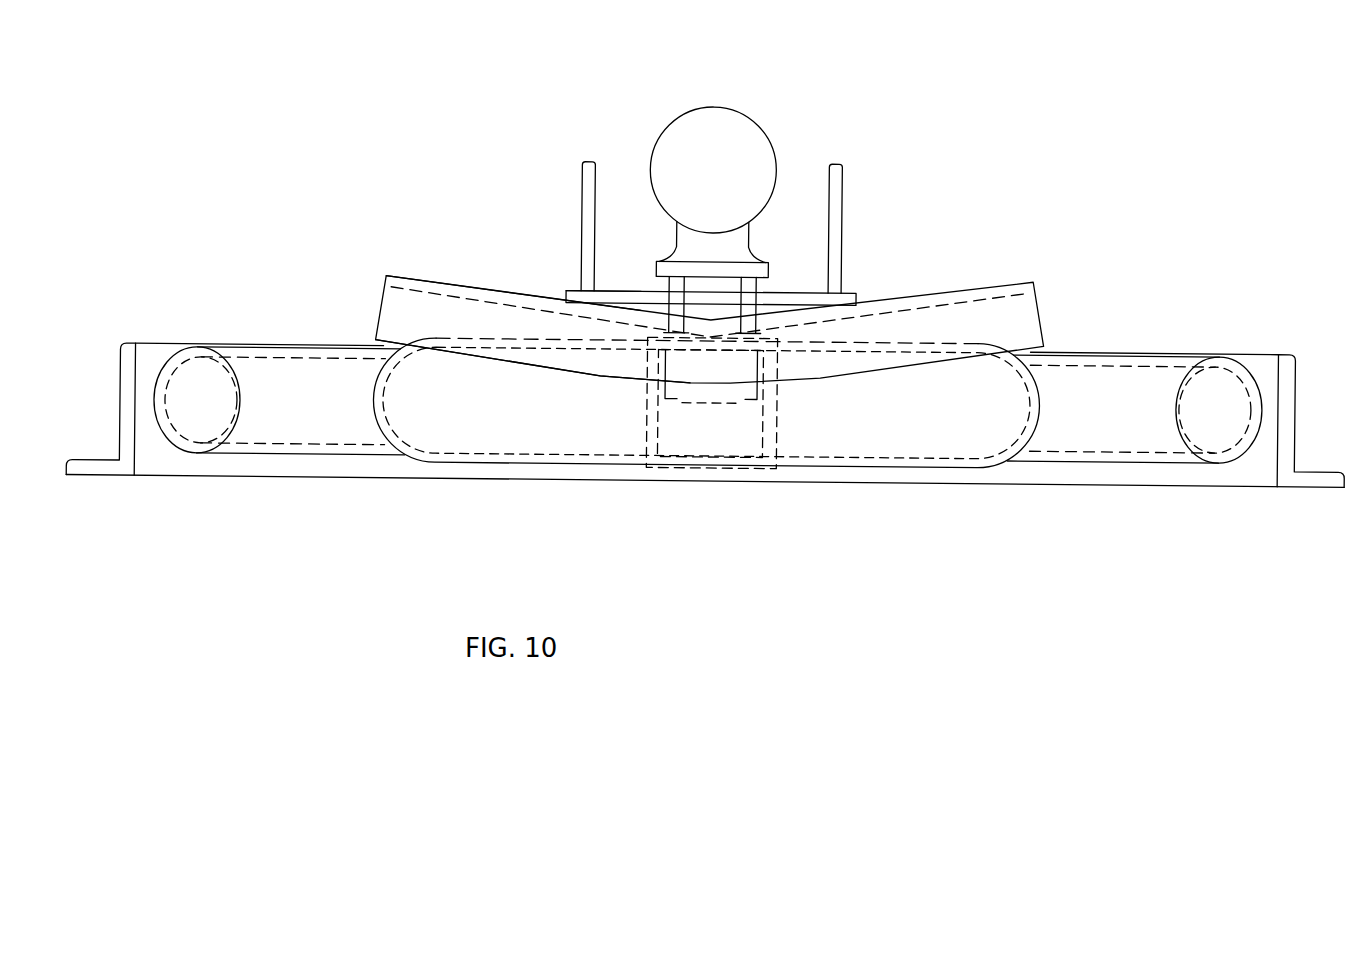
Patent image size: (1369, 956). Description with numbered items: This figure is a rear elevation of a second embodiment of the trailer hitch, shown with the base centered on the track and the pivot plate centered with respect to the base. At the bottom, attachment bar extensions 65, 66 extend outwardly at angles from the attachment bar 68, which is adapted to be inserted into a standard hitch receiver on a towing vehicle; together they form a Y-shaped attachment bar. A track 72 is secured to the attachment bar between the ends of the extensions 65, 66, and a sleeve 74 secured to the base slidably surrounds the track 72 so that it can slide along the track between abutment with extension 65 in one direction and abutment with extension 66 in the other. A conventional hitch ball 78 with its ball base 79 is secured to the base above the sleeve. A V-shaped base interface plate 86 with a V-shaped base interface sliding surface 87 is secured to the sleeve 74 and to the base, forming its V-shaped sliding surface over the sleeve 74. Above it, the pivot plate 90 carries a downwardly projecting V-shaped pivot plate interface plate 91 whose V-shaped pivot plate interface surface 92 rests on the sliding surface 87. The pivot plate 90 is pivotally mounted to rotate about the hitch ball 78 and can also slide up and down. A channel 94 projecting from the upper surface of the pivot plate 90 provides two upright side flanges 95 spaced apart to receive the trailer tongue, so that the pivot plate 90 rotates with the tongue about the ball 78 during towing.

The attachment bar extension 65 is at (123, 408).
The attachment bar extension 66 is at (1293, 420).
The attachment bar 68 is at (642, 430).
The track 72 is at (248, 345).
The sleeve 74 is at (962, 467).
The hitch ball 78 is at (727, 113).
The ball base 79 is at (652, 271).
The V-shaped base interface plate 86 is at (385, 313).
The V-shaped base interface sliding surface 87 is at (433, 282).
The pivot plate 90 is at (850, 298).
The V-shaped pivot plate interface plate 91 is at (767, 320).
The V-shaped pivot plate interface surface 92 is at (626, 340).
The channel 94 is at (617, 288).
The side flange 95 is at (585, 181).